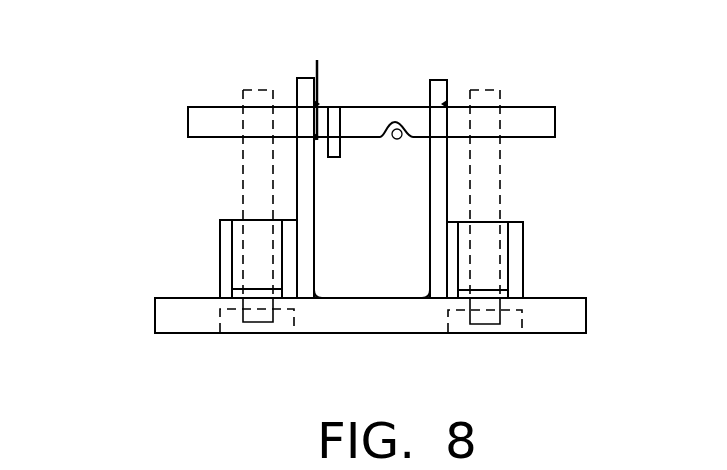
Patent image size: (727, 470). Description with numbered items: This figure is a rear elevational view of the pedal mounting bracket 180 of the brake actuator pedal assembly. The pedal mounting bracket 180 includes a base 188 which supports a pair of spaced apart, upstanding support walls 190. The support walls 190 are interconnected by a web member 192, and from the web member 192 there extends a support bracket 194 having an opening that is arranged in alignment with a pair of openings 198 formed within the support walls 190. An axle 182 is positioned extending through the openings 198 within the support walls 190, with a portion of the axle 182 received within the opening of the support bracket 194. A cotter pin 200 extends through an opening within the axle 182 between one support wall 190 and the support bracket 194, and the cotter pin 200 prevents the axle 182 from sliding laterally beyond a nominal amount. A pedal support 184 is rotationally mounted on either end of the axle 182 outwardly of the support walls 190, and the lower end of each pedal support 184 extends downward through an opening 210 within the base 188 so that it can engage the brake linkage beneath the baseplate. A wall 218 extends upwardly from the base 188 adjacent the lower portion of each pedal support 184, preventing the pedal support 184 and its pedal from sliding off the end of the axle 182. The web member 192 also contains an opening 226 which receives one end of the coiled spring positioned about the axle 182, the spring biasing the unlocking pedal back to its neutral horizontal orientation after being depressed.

The pedal mounting bracket 180 is at (163, 316).
The axle 182 is at (540, 128).
The pedal supports 184 is at (262, 88).
The base 188 is at (579, 316).
The support walls 190 is at (294, 178).
The web member 192 is at (372, 280).
The support bracket 194 is at (340, 105).
The openings 198 is at (309, 77).
The cotter pin 200 is at (317, 62).
The opening 210 is at (258, 334).
The wall 218 is at (227, 260).
The opening 226 is at (403, 128).